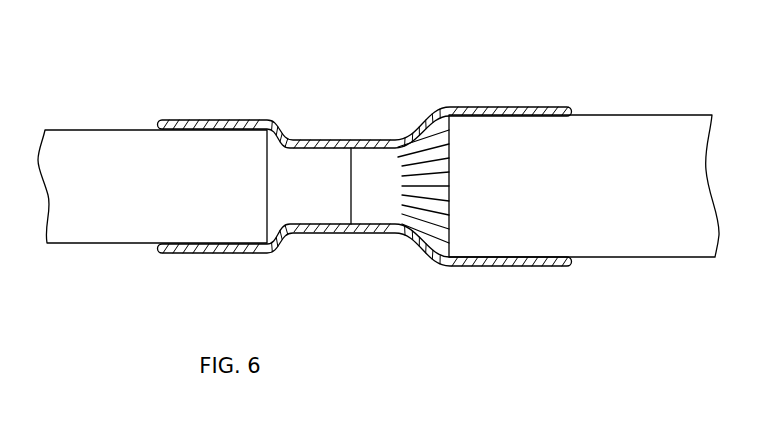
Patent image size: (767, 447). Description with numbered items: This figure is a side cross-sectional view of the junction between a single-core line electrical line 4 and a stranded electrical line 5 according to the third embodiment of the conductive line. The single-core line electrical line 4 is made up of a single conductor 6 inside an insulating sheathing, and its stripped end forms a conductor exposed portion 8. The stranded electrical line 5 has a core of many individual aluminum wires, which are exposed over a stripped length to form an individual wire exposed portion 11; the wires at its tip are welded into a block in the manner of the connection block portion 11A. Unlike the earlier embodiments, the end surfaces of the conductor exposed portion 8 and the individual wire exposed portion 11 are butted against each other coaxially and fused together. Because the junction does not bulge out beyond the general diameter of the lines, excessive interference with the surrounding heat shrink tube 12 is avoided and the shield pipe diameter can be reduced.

The single-core line electrical line 4 is at (80, 126).
The stranded electrical line 5 is at (683, 102).
The conductor 6 is at (365, 200).
The conductor exposed portion 8 is at (305, 210).
The individual wire exposed portion 11 is at (418, 172).
The connection block portion 11A is at (388, 158).
The heat shrink tube 12 is at (452, 265).